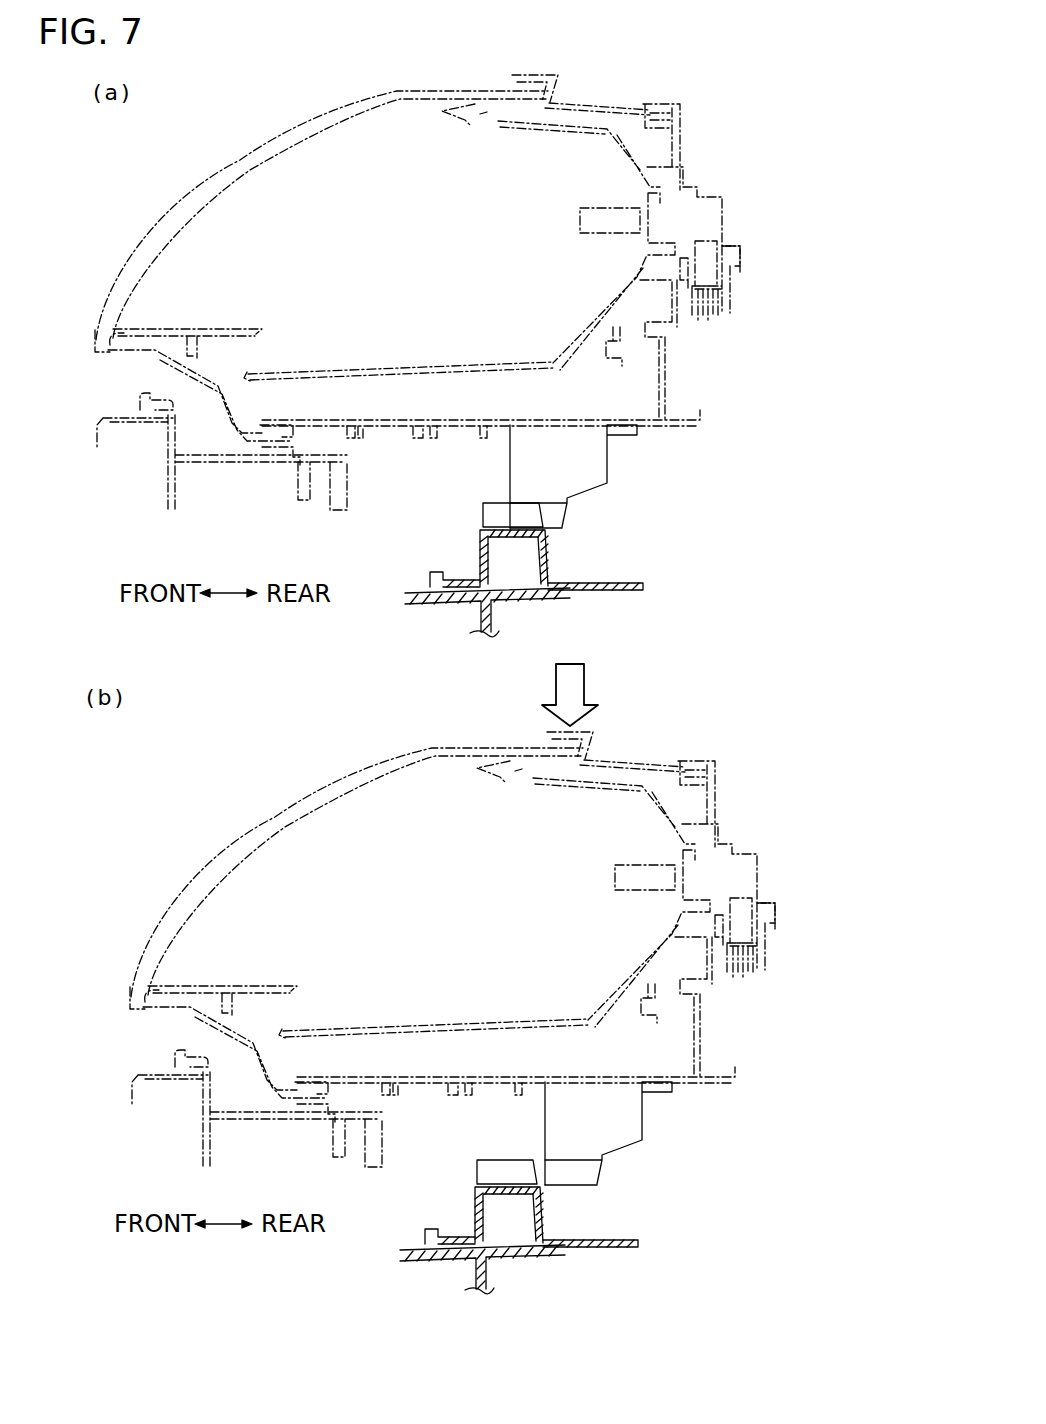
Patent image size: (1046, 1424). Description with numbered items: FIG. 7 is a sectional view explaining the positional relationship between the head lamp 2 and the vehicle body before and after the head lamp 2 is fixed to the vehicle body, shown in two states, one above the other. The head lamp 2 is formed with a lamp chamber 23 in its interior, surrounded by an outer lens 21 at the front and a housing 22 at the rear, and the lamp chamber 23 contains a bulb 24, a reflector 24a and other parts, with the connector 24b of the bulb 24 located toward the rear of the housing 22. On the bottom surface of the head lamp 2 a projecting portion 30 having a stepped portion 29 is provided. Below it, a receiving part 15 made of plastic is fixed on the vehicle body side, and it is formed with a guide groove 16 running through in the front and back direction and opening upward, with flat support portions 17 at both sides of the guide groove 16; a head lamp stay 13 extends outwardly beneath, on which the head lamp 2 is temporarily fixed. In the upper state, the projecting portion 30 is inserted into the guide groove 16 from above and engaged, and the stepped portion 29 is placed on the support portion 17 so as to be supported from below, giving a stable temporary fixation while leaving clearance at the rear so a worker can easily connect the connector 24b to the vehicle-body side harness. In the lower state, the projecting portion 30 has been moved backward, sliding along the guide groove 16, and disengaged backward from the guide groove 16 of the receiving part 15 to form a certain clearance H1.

The head lamp 2 is at (166, 231).
The outer lens 21 is at (212, 192).
The lamp chamber 23 is at (333, 190).
The housing 22 is at (682, 132).
The bulb 24 is at (580, 226).
The reflector 24a is at (442, 360).
The connector 24b is at (735, 301).
The stepped portion 29 is at (560, 512).
The projecting portion 30 is at (562, 537).
The support portion 17 is at (495, 505).
The guide groove 16 is at (493, 517).
The receiving part 15 is at (478, 563).
The head lamp stay 13 is at (472, 610).
The clearance H1 is at (568, 1212).